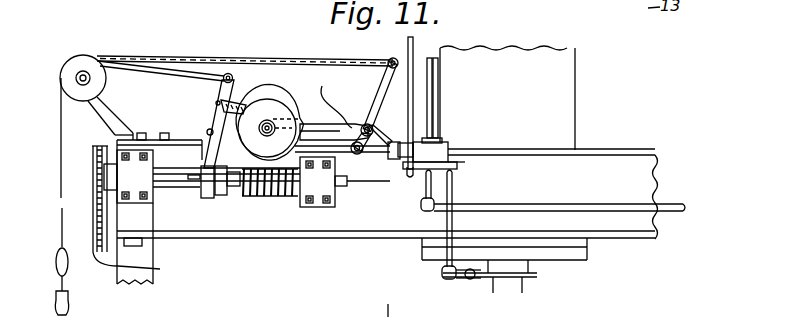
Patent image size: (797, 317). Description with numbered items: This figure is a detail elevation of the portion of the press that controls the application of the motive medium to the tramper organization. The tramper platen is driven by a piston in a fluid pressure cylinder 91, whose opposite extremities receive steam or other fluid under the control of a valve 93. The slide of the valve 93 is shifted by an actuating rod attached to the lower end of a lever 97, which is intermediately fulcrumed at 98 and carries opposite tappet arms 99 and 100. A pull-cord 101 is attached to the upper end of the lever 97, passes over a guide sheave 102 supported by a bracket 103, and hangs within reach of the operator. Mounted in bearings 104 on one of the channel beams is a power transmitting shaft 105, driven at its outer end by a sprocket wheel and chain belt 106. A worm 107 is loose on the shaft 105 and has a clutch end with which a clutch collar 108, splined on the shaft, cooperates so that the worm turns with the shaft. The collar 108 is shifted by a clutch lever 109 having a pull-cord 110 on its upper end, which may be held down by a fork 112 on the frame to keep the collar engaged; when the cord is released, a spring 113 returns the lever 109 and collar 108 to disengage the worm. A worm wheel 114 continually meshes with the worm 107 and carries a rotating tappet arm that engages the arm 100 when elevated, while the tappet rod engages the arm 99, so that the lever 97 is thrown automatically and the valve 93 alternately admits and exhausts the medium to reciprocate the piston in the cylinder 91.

The fluid pressure cylinder 91 is at (560, 101).
The valve 93 is at (453, 164).
The lever 97 is at (353, 126).
The fulcrum 98 is at (348, 123).
The tappet arm 99 is at (382, 138).
The tappet arm 100 is at (322, 86).
The pull-cord 101 is at (298, 60).
The guide sheave 102 is at (75, 60).
The bracket 103 is at (113, 108).
The bearings 104 is at (154, 200).
The power transmitting shaft 105 is at (162, 176).
The sprocket wheel and chain belt 106 is at (150, 283).
The worm 107 is at (250, 198).
The clutch collar 108 is at (225, 212).
The clutch lever 109 is at (212, 117).
The pull-cord 110 is at (182, 47).
The fork 112 is at (334, 134).
The spring 113 is at (226, 107).
The worm wheel 114 is at (269, 122).